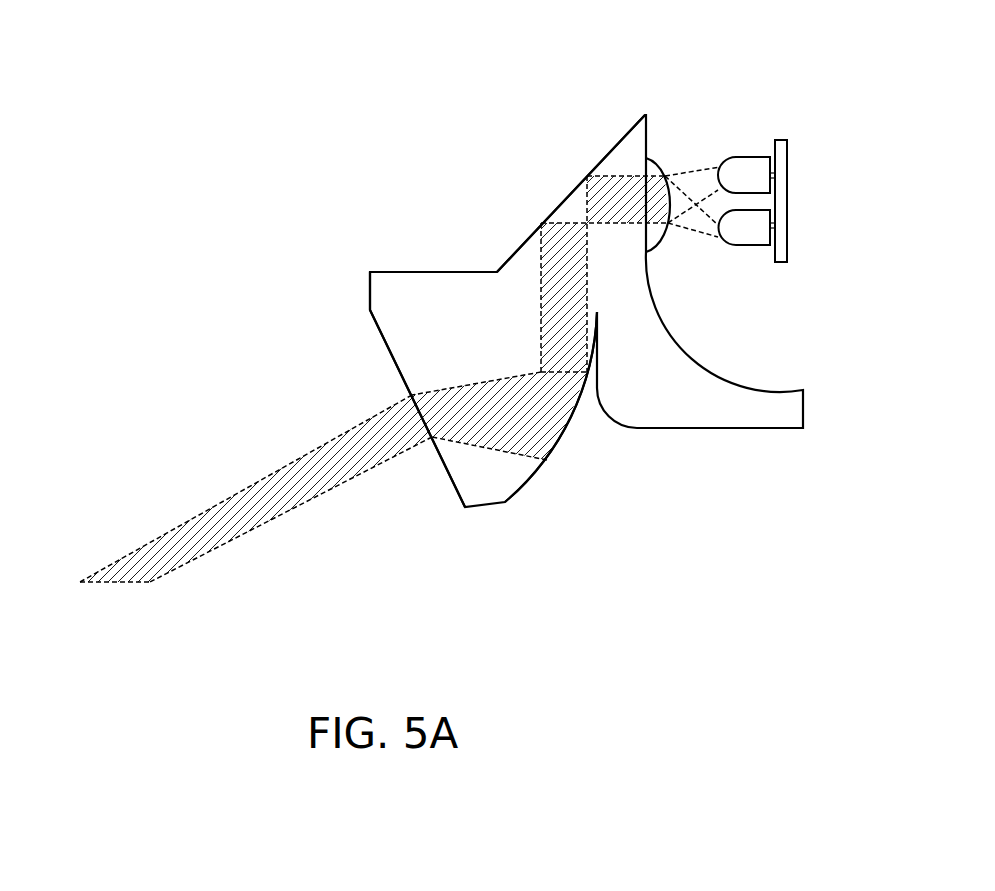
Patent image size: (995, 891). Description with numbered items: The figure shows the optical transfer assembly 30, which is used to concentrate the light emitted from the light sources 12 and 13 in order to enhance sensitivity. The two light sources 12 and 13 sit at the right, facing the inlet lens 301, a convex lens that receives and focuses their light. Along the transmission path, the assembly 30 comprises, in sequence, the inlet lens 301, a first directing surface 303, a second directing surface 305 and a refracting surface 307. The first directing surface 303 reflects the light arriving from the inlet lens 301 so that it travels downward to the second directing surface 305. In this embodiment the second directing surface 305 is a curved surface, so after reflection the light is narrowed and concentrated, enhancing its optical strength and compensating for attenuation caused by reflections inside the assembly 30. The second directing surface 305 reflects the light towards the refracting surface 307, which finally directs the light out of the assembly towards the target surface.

The optical transfer assembly 30 is at (380, 102).
The light source 12 is at (750, 155).
The light source 13 is at (742, 247).
The inlet lens 301 is at (660, 243).
The first directing surface 303 is at (575, 190).
The second directing surface 305 is at (559, 448).
The refracting surface 307 is at (394, 358).